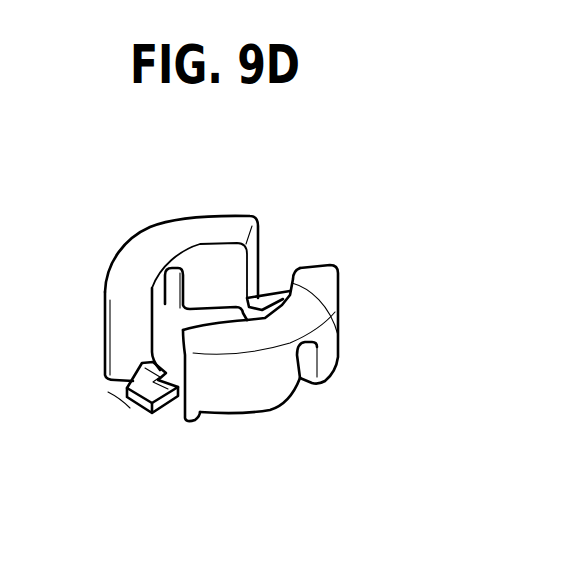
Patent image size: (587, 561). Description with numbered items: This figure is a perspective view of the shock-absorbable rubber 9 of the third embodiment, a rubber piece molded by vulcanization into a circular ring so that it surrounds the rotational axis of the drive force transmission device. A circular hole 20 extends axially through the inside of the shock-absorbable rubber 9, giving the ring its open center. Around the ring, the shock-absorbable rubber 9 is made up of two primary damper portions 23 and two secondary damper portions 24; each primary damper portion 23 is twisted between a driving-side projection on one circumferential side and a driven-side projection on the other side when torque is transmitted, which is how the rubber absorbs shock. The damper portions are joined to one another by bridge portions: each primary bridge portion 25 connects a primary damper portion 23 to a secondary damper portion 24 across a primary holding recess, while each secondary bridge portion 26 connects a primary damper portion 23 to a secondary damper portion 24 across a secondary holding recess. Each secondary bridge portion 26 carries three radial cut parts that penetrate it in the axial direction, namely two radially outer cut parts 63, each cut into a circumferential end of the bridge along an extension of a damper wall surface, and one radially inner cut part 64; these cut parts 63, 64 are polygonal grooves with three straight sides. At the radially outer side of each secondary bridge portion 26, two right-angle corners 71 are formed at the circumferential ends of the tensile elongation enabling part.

The shock-absorbable rubber 9 is at (120, 224).
The circular hole 20 is at (200, 380).
The primary damper portion 23 is at (232, 222).
The secondary damper portion 24 is at (147, 303).
The primary bridge portion 25 is at (157, 228).
The secondary bridge portion 26 is at (277, 290).
The radially outer cut part 63 is at (125, 387).
The radially inner cut part 64 is at (223, 318).
The corner 71 is at (123, 390).